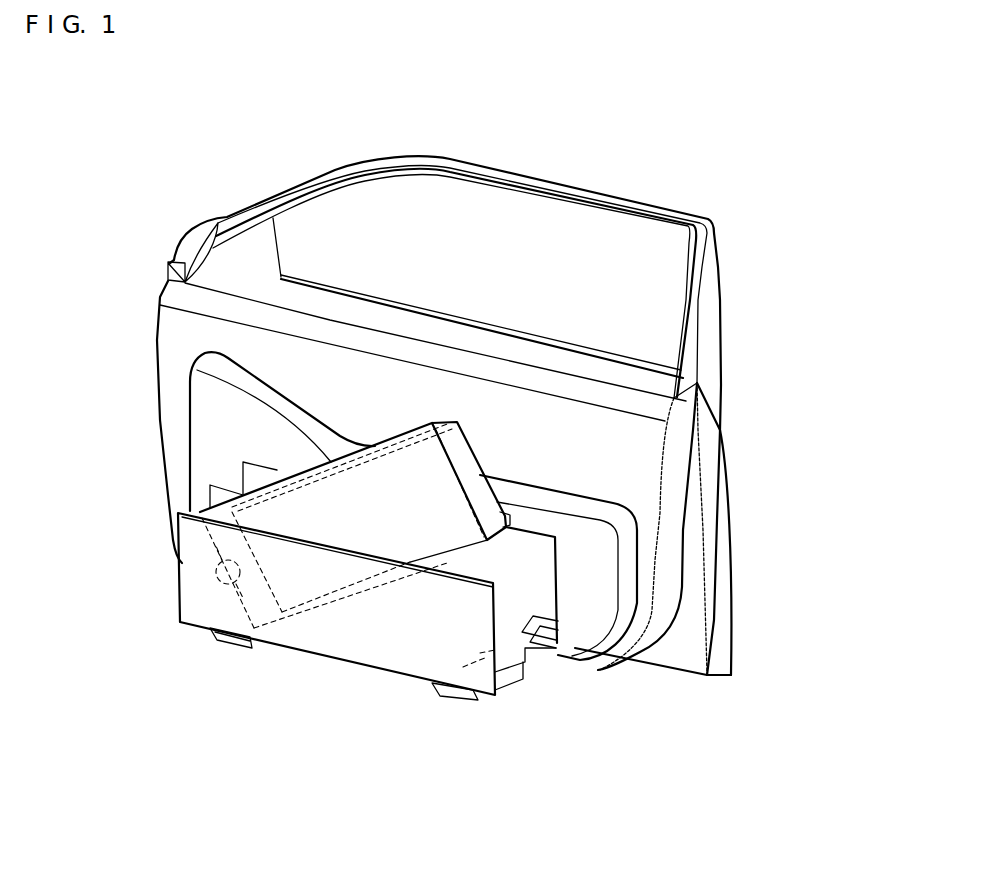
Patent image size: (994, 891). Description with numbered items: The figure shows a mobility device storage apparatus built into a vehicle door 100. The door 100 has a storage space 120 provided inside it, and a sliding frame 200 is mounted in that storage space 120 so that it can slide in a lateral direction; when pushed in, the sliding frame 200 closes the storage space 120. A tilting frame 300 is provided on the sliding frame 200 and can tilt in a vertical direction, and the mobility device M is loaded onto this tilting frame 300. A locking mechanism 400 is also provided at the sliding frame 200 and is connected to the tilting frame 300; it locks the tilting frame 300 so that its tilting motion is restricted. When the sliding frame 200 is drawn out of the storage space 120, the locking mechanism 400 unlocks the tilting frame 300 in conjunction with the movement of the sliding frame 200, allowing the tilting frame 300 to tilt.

The door 100 is at (638, 459).
The storage space 120 is at (528, 578).
The sliding frame 200 is at (372, 647).
The tilting frame 300 is at (208, 513).
The locking mechanism 400 is at (543, 657).
The mobility device M is at (460, 455).